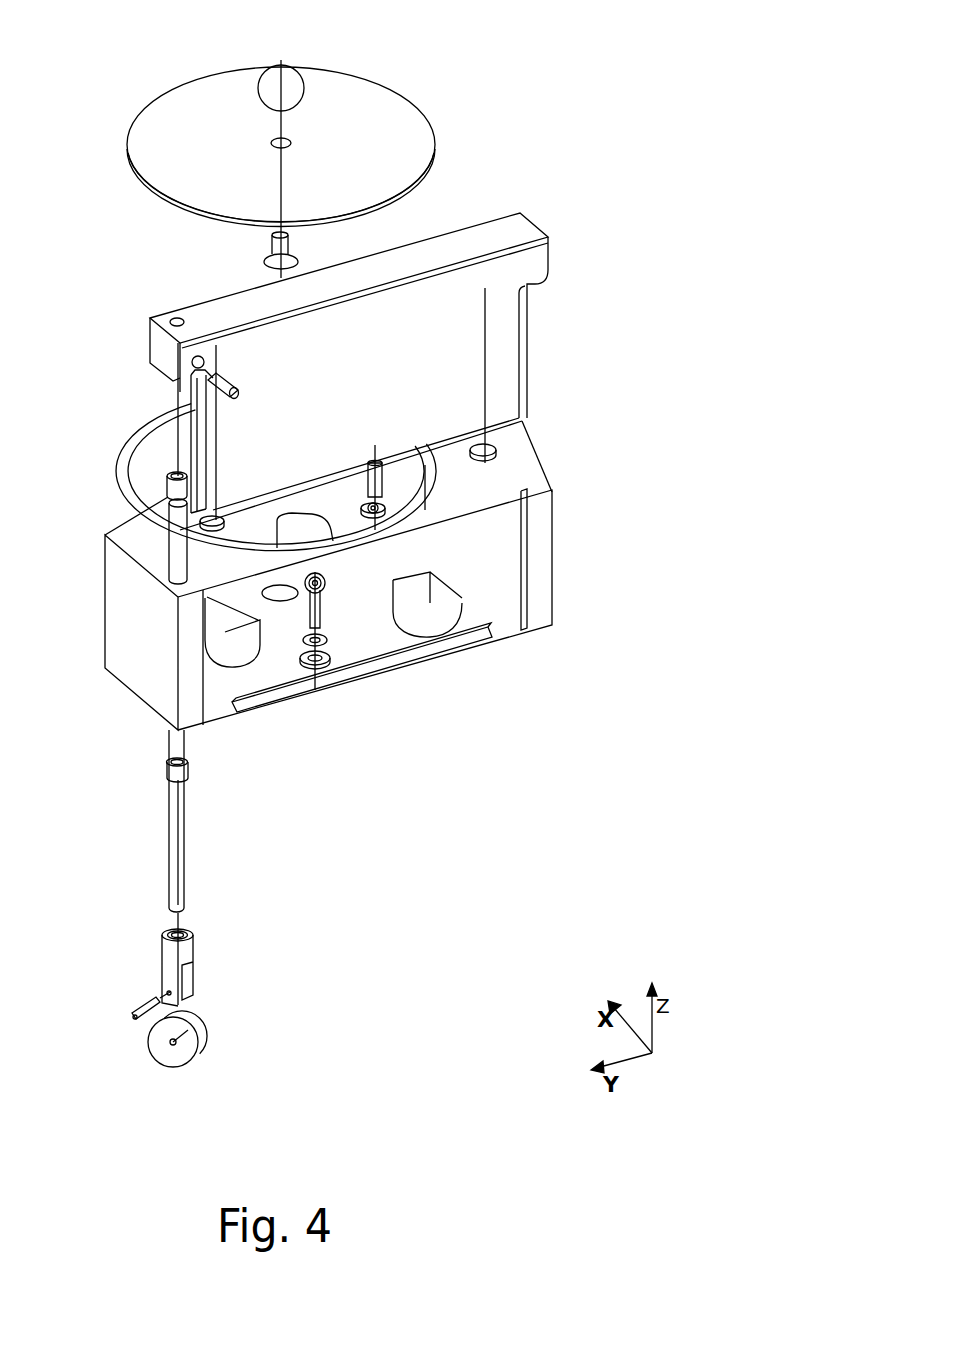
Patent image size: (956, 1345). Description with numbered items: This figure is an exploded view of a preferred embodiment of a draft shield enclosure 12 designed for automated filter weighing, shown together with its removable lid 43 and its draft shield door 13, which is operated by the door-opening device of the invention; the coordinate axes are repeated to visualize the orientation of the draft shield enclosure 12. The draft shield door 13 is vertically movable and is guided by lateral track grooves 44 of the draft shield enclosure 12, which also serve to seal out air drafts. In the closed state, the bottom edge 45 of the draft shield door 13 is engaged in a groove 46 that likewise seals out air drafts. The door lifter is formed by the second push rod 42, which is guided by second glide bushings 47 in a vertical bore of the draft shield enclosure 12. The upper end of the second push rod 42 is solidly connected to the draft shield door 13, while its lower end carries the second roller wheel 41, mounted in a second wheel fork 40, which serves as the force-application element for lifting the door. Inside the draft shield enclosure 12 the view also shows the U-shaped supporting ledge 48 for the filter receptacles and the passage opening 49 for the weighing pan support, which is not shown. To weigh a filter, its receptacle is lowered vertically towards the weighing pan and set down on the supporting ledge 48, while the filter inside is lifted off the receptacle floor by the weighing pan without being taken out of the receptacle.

The draft shield enclosure 12 is at (138, 641).
The draft shield door 13 is at (503, 337).
The second wheel fork 40 is at (183, 946).
The second roller wheel 41 is at (168, 1053).
The second push rod 42 is at (178, 843).
The removable lid 43 is at (208, 88).
The lateral track grooves 44 is at (520, 620).
The bottom edge 45 is at (527, 419).
The groove 46 is at (393, 655).
The second glide bushings 47 is at (158, 490).
The U-shaped supporting ledge 48 is at (392, 556).
The passage opening 49 is at (282, 601).